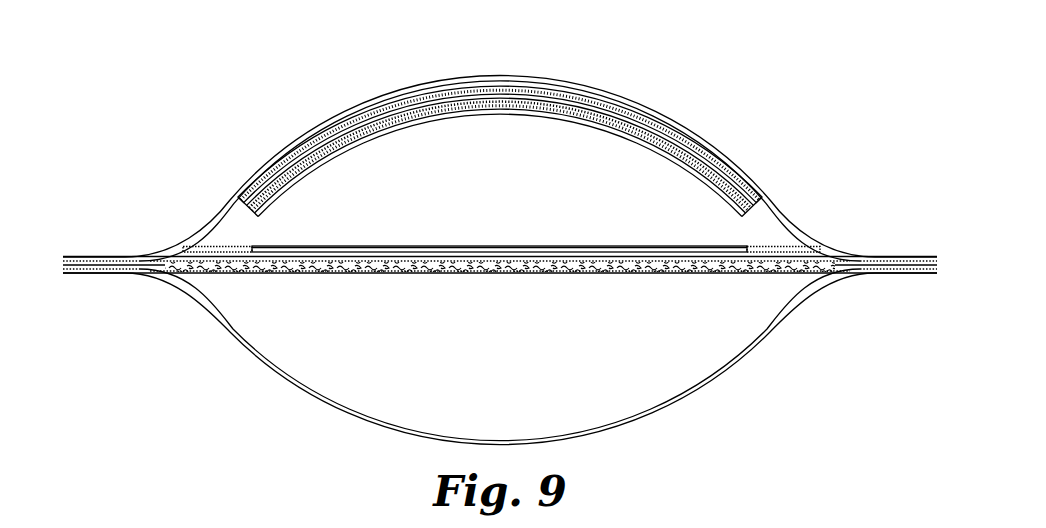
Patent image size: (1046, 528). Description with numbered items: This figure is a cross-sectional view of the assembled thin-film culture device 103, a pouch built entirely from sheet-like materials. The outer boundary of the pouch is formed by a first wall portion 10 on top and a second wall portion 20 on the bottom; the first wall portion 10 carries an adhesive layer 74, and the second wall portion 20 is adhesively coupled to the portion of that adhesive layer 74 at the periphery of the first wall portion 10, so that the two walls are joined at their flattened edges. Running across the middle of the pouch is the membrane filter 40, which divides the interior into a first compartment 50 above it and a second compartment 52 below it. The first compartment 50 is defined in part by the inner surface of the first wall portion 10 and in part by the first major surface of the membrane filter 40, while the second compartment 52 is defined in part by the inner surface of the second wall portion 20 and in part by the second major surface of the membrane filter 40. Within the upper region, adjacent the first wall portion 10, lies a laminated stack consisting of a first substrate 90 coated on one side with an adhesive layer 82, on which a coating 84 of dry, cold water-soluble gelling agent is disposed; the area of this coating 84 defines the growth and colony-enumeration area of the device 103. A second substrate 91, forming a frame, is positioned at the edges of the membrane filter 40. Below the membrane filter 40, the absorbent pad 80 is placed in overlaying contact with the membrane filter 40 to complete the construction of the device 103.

The first wall portion 10 is at (558, 84).
The second wall portion 20 is at (530, 437).
The membrane filter 40 is at (519, 249).
The first compartment 50 is at (636, 216).
The second compartment 52 is at (636, 343).
The adhesive layer 74 is at (628, 113).
The absorbent pad 80 is at (446, 265).
The adhesive layer 82 is at (548, 113).
The coating 84 is at (358, 147).
The first substrate 90 is at (493, 100).
The second substrate 91 is at (242, 247).
The device 103 is at (748, 112).